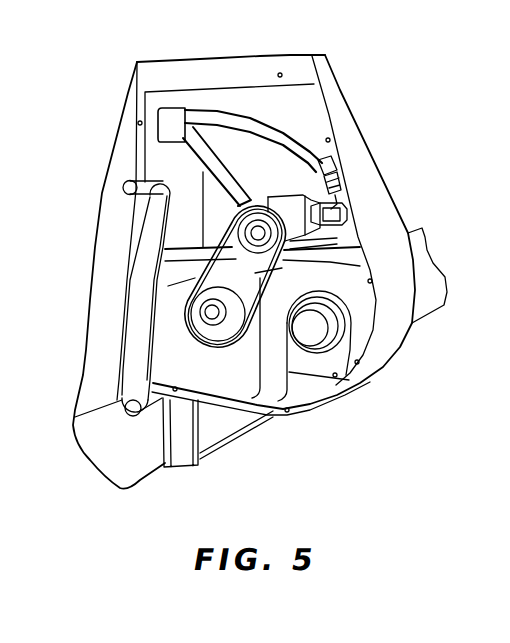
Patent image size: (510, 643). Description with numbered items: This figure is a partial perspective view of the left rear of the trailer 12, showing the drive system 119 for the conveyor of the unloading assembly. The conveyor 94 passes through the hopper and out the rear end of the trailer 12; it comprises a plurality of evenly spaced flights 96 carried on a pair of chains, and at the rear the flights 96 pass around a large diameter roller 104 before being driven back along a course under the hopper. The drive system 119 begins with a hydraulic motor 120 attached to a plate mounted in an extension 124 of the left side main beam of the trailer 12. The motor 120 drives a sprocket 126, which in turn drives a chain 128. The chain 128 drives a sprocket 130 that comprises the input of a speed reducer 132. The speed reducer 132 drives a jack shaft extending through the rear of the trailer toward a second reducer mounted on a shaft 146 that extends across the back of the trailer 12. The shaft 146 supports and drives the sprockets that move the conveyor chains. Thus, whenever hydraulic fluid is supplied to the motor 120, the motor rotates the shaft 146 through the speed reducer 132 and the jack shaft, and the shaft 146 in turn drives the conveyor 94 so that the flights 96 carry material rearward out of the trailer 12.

The trailer 12 is at (129, 68).
The extension of the left side main beam 124 is at (159, 150).
The hydraulic motor 120 is at (285, 196).
The drive system 119 is at (183, 268).
The sprocket 126 is at (238, 228).
The chain 128 is at (278, 273).
The sprocket 130 is at (200, 333).
The conveyor 94 is at (132, 333).
The flights 96 is at (128, 413).
The speed reducer 132 is at (235, 378).
The shaft 146 is at (308, 333).
The roller 104 is at (427, 300).